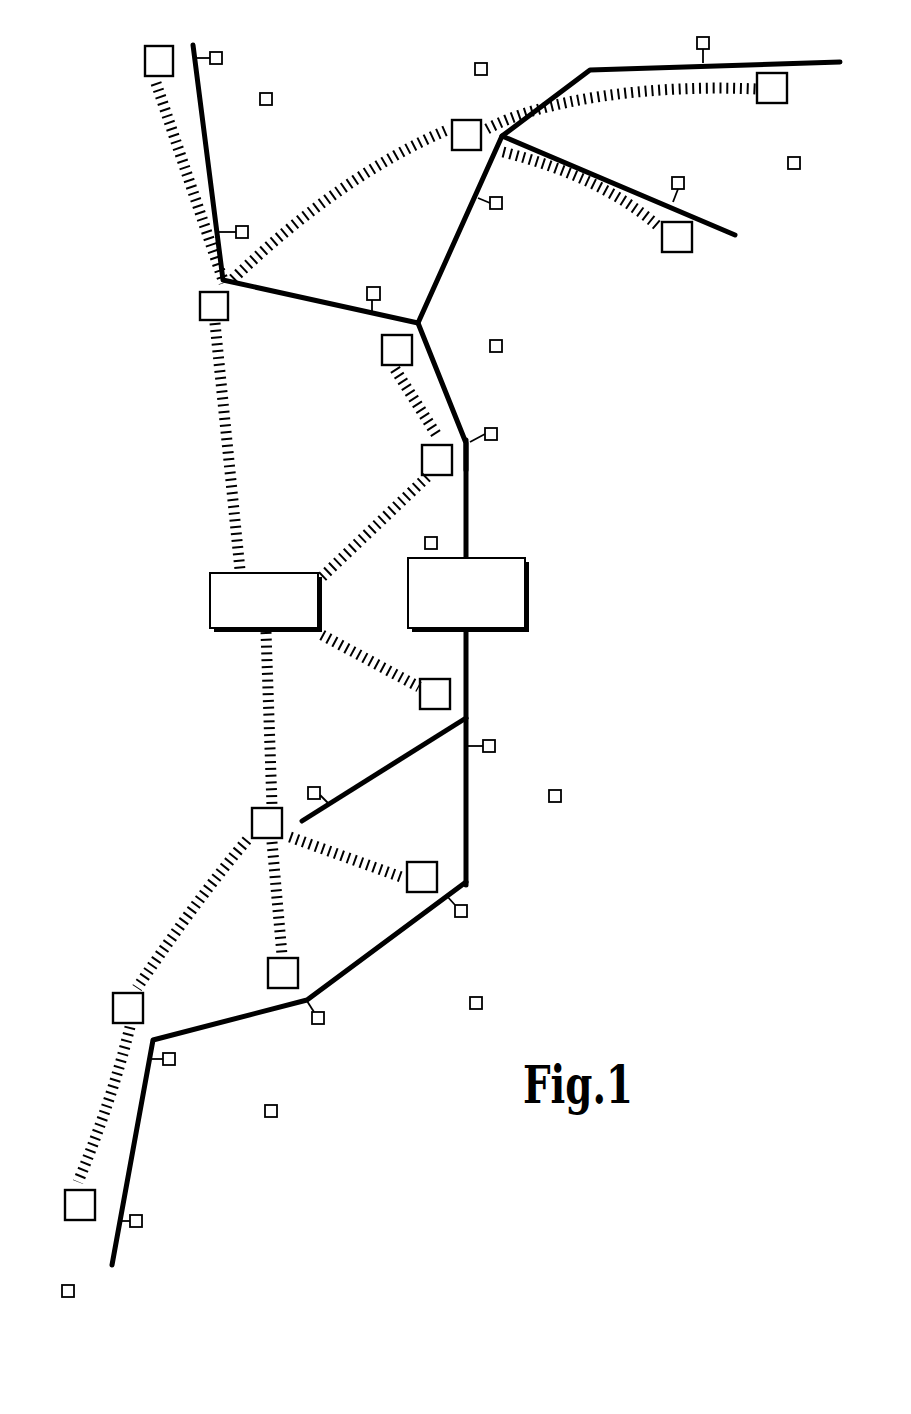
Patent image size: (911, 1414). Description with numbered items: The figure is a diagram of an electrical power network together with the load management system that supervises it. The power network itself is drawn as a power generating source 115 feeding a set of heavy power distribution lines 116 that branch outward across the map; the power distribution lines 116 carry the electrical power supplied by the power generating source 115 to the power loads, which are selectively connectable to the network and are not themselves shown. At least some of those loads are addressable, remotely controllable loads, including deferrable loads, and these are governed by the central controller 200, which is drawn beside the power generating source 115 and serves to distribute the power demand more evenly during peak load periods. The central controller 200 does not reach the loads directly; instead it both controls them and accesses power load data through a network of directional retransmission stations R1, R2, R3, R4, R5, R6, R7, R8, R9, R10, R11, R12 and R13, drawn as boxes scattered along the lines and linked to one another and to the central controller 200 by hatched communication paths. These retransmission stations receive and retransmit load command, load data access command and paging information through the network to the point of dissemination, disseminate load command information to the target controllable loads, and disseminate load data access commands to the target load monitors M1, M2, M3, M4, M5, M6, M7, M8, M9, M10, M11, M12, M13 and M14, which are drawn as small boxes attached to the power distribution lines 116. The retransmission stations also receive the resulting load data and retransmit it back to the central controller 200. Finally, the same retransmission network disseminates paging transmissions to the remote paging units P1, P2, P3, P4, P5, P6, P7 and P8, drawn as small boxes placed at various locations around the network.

The central controller 200 is at (282, 573).
The power generating source 115 is at (528, 573).
The power distribution lines 116 is at (468, 498).
The retransmission station R1 is at (252, 808).
The retransmission station R2 is at (143, 1007).
The retransmission station R3 is at (65, 1202).
The retransmission station R4 is at (298, 970).
The retransmission station R5 is at (430, 862).
The retransmission station R6 is at (423, 709).
The retransmission station R7 is at (422, 458).
The retransmission station R8 is at (382, 357).
The retransmission station R9 is at (228, 310).
The retransmission station R10 is at (145, 62).
The retransmission station R11 is at (452, 130).
The retransmission station R12 is at (787, 90).
The relay station R13 is at (692, 250).
The load monitor M1 is at (320, 791).
The load monitor M2 is at (175, 1060).
The load monitor M3 is at (142, 1223).
The load monitor M4 is at (322, 1024).
The load monitor M5 is at (464, 917).
The load monitor M6 is at (495, 745).
The load monitor M7 is at (497, 435).
The load monitor M8 is at (380, 292).
The load monitor M9 is at (248, 230).
The load monitor M10 is at (222, 58).
The load monitor M11 is at (502, 205).
The load monitor M12 is at (709, 43).
The load monitor M13 is at (684, 181).
The load monitor M14 is at (431, 537).
The remote paging unit P1 is at (74, 1291).
The remote paging unit P2 is at (277, 1111).
The remote paging unit P3 is at (482, 1002).
The remote paging unit P4 is at (561, 796).
The remote paging unit P5 is at (502, 345).
The remote paging unit P6 is at (272, 102).
The remote paging unit P7 is at (487, 70).
The remote paging unit P8 is at (800, 163).